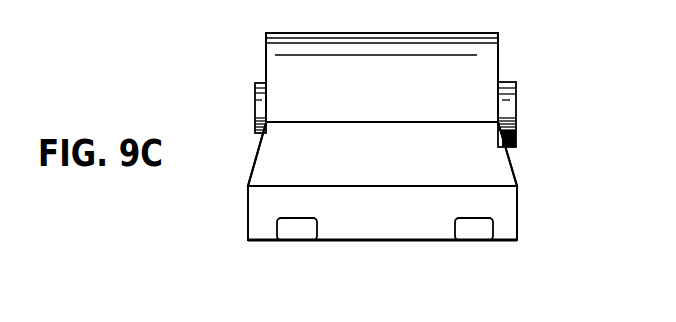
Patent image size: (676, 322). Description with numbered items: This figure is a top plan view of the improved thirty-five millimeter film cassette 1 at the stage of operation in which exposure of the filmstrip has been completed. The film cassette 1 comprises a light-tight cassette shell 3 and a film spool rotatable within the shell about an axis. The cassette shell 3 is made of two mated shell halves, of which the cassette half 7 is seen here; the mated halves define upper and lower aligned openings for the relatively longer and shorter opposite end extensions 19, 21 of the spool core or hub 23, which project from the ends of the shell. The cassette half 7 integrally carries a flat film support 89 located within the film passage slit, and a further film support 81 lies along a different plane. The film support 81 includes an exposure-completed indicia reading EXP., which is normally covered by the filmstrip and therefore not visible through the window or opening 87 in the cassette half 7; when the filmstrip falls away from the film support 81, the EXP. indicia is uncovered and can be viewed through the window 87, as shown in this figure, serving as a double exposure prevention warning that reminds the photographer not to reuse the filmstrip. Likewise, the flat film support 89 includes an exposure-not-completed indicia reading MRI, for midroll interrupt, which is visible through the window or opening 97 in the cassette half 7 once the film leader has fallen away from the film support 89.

The film cassette 1 is at (263, 68).
The cassette shell 3 is at (266, 52).
The shell half 7 is at (268, 175).
The longer end extension 19 is at (516, 84).
The shorter end extension 21 is at (258, 116).
The spool core 23 is at (517, 131).
The film support 81 is at (480, 243).
The window 87 is at (472, 218).
The flat film support 89 is at (302, 243).
The window 97 is at (318, 233).